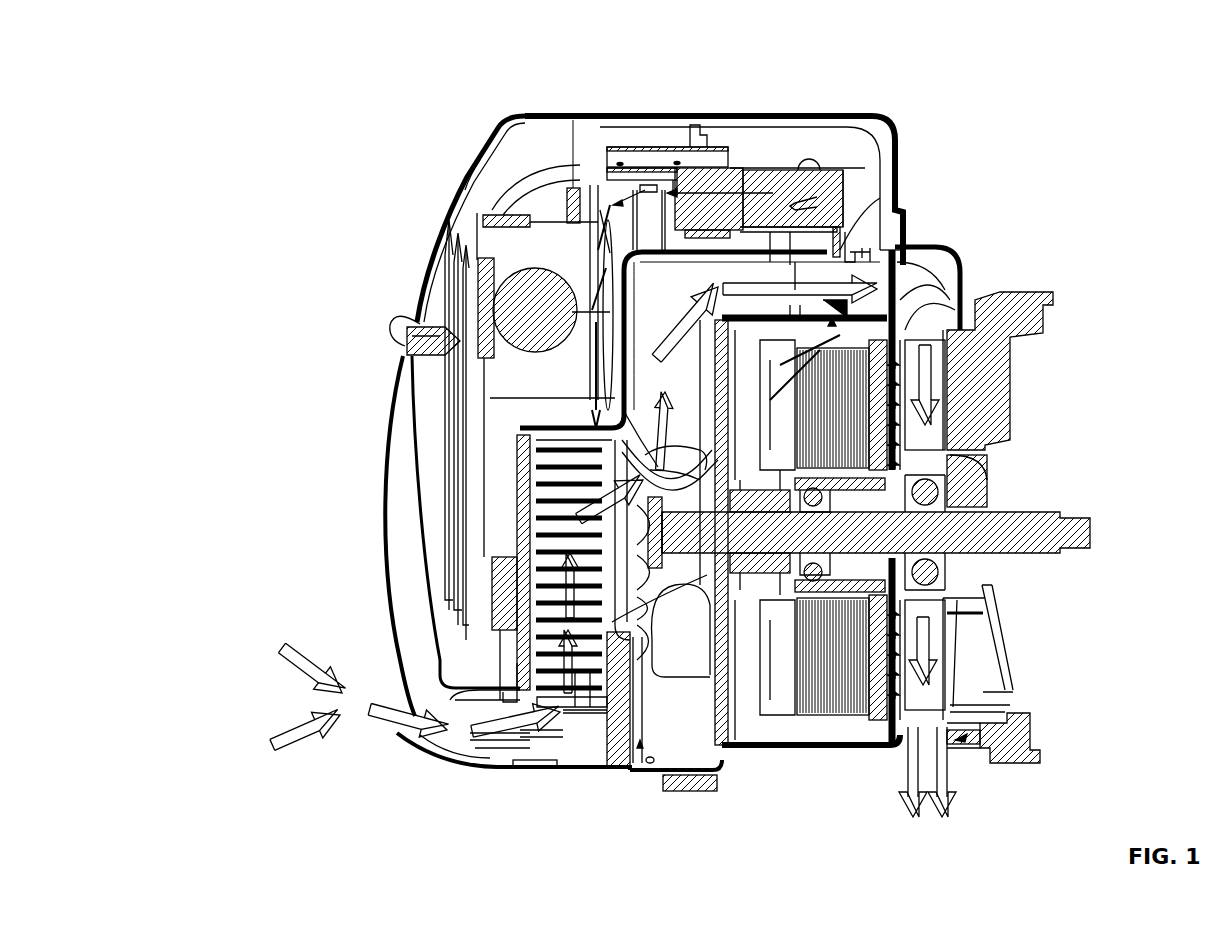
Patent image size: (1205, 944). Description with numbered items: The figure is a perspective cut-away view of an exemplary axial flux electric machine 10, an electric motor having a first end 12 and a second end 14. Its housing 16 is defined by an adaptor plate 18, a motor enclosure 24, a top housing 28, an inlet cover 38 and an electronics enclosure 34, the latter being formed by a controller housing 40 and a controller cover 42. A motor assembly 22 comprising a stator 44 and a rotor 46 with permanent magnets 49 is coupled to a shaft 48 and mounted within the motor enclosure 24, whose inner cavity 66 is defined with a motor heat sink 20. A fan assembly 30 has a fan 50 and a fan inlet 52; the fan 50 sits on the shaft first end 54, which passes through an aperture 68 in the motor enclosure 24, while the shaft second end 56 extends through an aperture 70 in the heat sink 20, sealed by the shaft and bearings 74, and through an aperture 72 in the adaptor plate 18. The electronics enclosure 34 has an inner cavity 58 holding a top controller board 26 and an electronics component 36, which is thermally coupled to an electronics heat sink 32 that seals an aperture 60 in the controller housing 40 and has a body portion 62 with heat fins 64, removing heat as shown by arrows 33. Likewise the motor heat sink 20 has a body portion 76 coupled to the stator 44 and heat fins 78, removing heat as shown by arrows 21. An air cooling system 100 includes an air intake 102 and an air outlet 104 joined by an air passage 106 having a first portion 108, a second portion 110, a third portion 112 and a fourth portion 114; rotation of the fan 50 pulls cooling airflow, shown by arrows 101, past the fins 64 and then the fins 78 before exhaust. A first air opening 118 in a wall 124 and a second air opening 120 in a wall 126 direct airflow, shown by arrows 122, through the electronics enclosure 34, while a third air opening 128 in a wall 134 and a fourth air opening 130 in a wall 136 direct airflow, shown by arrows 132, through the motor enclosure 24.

The electric machine 10 is at (272, 100).
The first end 12 is at (345, 212).
The second end 14 is at (1035, 268).
The housing 16 is at (600, 118).
The adaptor plate 18 is at (1035, 740).
The motor heat sink 20 is at (905, 760).
The arrows 21 is at (903, 372).
The motor assembly 22 is at (828, 722).
The motor enclosure 24 is at (862, 742).
The top controller board 26 is at (748, 170).
The top housing 28 is at (822, 116).
The fan assembly 30 is at (640, 760).
The electronics heat sink 32 is at (470, 722).
The arrows 33 is at (495, 505).
The electronics enclosure 34 is at (505, 165).
The electronics component 36 is at (495, 452).
The inlet cover 38 is at (380, 518).
The controller housing 40 is at (630, 300).
The controller cover 42 is at (447, 188).
The stator 44 is at (832, 722).
The rotor 46 is at (770, 700).
The shaft 48 is at (1005, 512).
The permanent magnets 49 is at (790, 700).
The fan 50 is at (700, 647).
The fan inlet 52 is at (603, 745).
The shaft first end 54 is at (675, 536).
The shaft second end 56 is at (1085, 505).
The inner cavity 58 is at (563, 188).
The aperture 60 is at (492, 770).
The body portion 62 is at (495, 600).
The heat fins 64 is at (560, 740).
The inner cavity 66 is at (910, 298).
The aperture 68 is at (748, 560).
The aperture 70 is at (890, 578).
The aperture 72 is at (962, 482).
The bearings 74 is at (825, 485).
The body portion 76 is at (885, 488).
The heat fins 78 is at (930, 440).
The air cooling system 100 is at (378, 775).
The arrows 101 is at (365, 743).
The air intake 102 is at (445, 720).
The air outlet 104 is at (958, 742).
The air passage 106 is at (660, 283).
The first portion 108 is at (530, 735).
The second portion 110 is at (520, 415).
The third portion 112 is at (668, 653).
The fourth portion 114 is at (770, 265).
The first air opening 118 is at (897, 225).
The second air opening 120 is at (590, 428).
The arrows 122 is at (697, 172).
The wall 124 is at (787, 268).
The wall 126 is at (568, 428).
The third air opening 128 is at (835, 325).
The fourth air opening 130 is at (684, 478).
The arrows 132 is at (705, 448).
The wall 134 is at (795, 328).
The wall 136 is at (690, 683).